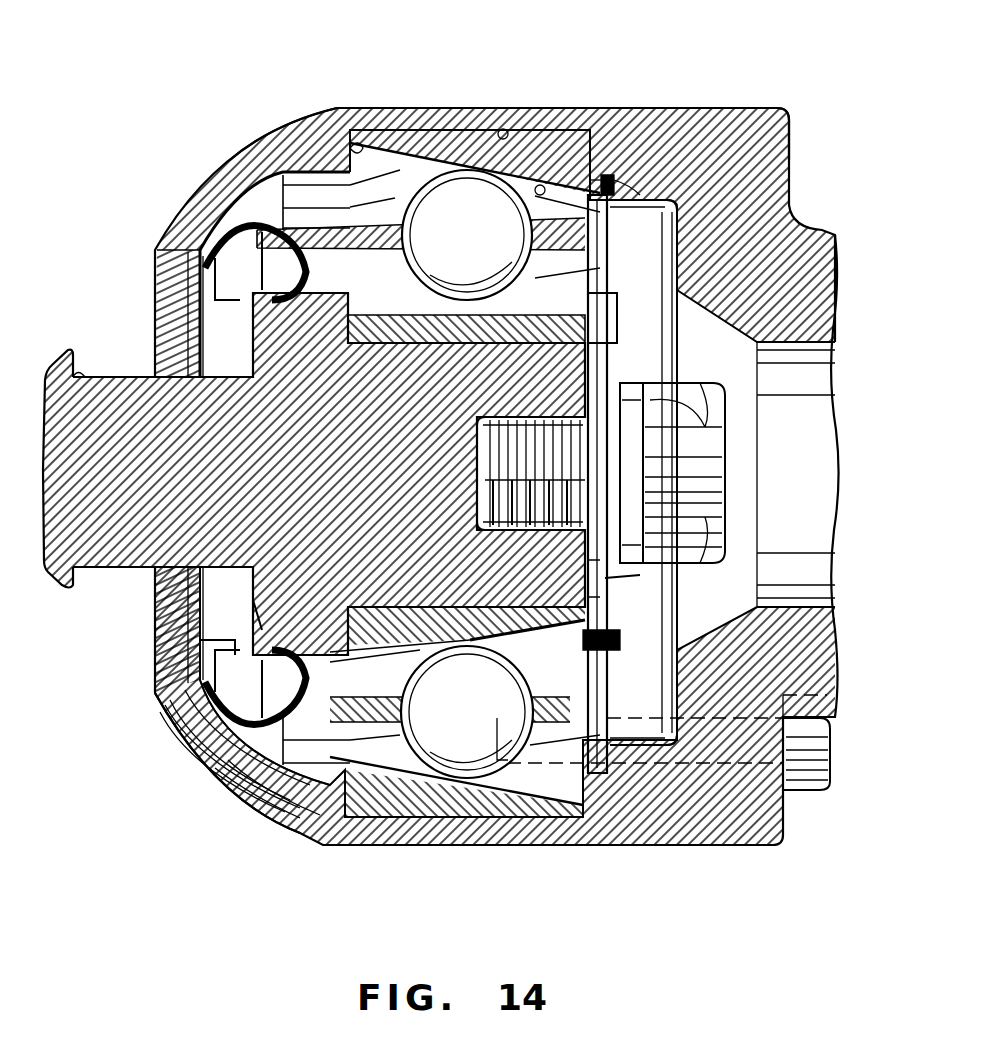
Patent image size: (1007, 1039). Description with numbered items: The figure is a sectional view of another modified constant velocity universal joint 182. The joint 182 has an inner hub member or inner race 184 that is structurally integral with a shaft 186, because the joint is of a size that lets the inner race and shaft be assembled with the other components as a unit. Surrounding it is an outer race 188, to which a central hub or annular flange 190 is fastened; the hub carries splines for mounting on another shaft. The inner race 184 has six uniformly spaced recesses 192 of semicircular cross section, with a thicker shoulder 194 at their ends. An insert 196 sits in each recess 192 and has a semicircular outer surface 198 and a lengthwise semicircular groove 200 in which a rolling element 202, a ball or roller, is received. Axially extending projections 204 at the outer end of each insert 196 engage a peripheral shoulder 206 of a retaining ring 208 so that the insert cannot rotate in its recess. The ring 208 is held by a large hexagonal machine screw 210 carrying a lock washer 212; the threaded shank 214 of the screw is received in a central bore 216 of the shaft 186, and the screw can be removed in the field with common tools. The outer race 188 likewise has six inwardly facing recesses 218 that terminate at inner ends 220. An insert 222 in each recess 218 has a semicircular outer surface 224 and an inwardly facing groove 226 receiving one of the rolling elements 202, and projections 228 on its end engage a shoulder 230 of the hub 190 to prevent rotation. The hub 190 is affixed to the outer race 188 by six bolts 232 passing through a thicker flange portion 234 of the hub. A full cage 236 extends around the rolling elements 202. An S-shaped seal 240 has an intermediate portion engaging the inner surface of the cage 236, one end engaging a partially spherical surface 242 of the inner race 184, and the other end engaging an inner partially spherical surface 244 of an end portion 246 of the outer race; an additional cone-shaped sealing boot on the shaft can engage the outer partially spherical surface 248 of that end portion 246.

The universal joint 182 is at (190, 97).
The inner race 184 is at (244, 371).
The shaft 186 is at (100, 375).
The outer race 188 is at (300, 119).
The central hub 190 is at (805, 192).
The recess 192 is at (595, 322).
The shoulder 194 is at (267, 330).
The insert 196 is at (338, 617).
The outer surface 198 is at (440, 607).
The groove 200 is at (612, 613).
The rolling element 202 is at (417, 748).
The projection 204 is at (602, 700).
The peripheral shoulder 206 is at (616, 240).
The retaining ring 208 is at (640, 580).
The machine screw 210 is at (842, 437).
The lock washer 212 is at (640, 413).
The threaded shank 214 is at (505, 417).
The central bore 216 is at (510, 518).
The recess 218 is at (504, 128).
The inner end 220 is at (356, 140).
The insert 222 is at (403, 122).
The outer surface 224 is at (473, 132).
The groove 226 is at (540, 184).
The projection 228 is at (620, 180).
The shoulder 230 is at (607, 172).
The bolt 232 is at (807, 788).
The flange portion 234 is at (733, 106).
The cage 236 is at (252, 785).
The seal 240 is at (228, 640).
The partially spherical surface 242 is at (258, 585).
The inner partially spherical surface 244 is at (222, 778).
The end portion 246 is at (277, 807).
The outer partially spherical surface 248 is at (288, 832).